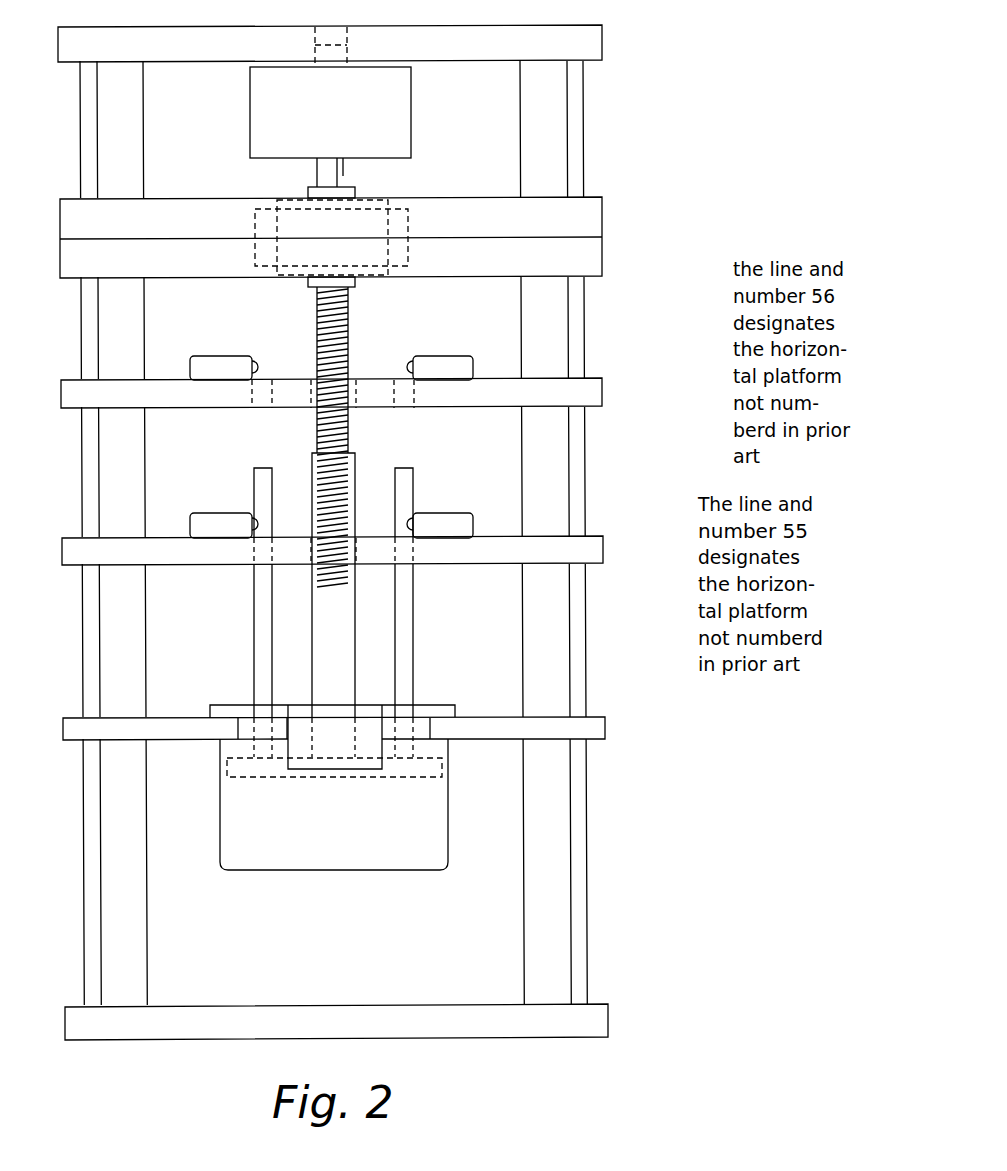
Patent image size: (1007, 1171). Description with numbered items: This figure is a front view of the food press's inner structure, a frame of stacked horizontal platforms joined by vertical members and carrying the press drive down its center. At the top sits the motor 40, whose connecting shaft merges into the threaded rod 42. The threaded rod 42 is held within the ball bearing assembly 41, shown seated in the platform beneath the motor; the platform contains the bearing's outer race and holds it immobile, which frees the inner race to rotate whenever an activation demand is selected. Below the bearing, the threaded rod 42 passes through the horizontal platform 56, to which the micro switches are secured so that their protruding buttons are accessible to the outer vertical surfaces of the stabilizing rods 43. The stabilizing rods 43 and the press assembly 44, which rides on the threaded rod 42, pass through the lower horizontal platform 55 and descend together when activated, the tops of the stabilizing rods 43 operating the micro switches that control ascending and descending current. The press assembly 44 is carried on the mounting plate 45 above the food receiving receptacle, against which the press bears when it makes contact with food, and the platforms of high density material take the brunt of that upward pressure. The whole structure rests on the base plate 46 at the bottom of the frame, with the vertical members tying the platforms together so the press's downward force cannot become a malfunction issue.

The motor 40 is at (343, 176).
The ball bearing assembly 41 is at (408, 217).
The threaded rod 42 is at (348, 322).
The stabilizing rods 43 is at (404, 675).
The press assembly 44 is at (345, 637).
The food receiving receptacle 45 is at (450, 710).
The base plate 46 is at (455, 1003).
The horizontal platform 55 is at (500, 537).
The horizontal platform 56 is at (497, 384).